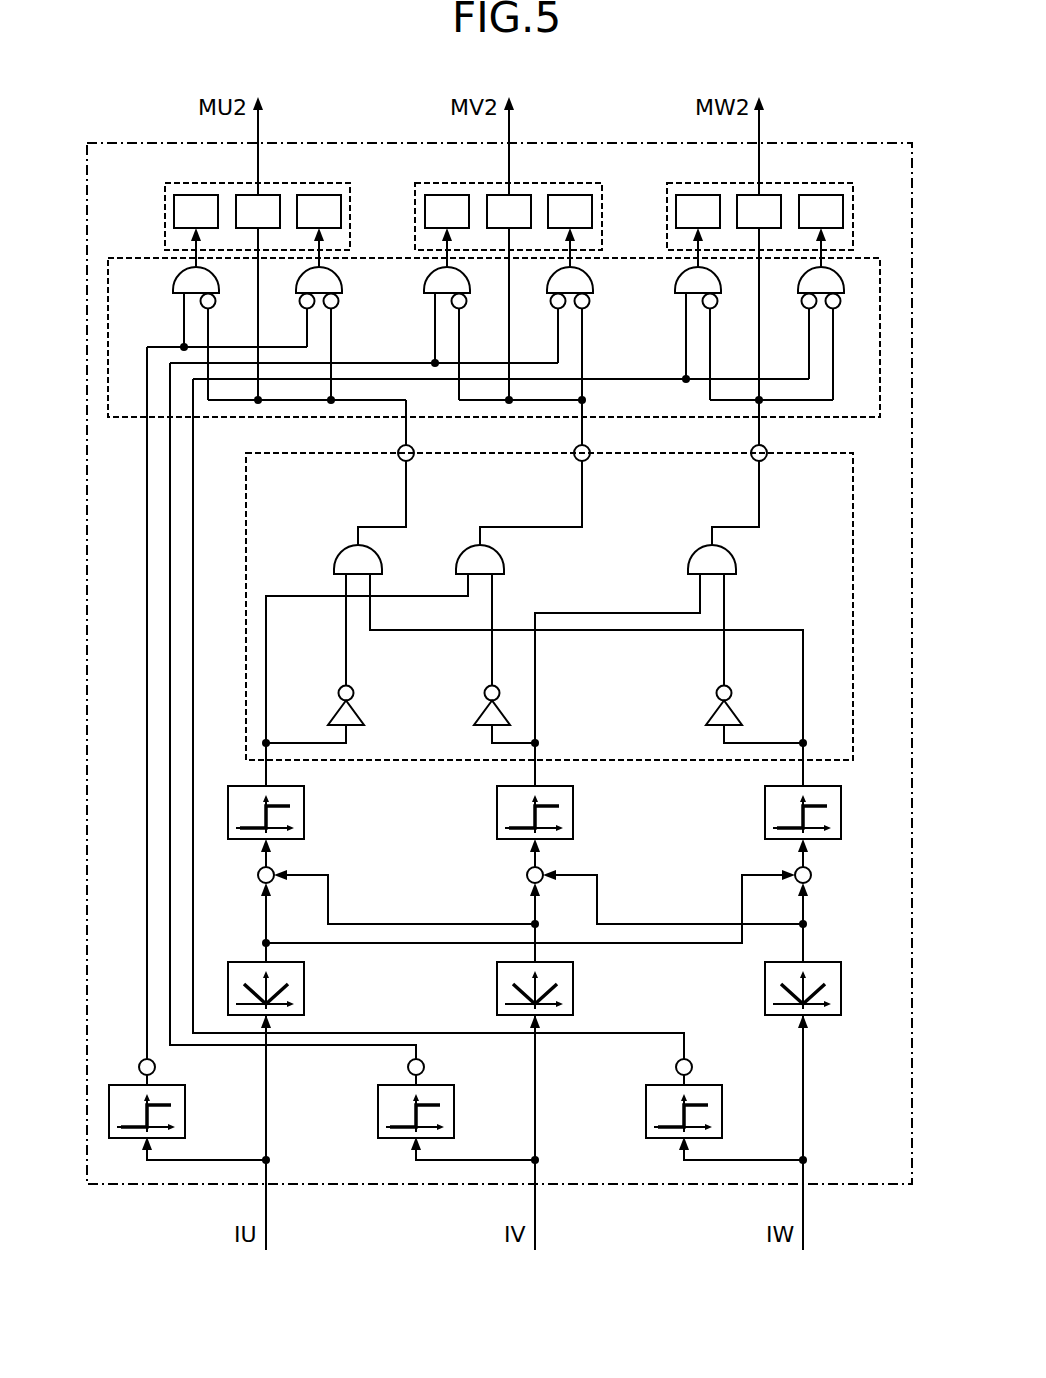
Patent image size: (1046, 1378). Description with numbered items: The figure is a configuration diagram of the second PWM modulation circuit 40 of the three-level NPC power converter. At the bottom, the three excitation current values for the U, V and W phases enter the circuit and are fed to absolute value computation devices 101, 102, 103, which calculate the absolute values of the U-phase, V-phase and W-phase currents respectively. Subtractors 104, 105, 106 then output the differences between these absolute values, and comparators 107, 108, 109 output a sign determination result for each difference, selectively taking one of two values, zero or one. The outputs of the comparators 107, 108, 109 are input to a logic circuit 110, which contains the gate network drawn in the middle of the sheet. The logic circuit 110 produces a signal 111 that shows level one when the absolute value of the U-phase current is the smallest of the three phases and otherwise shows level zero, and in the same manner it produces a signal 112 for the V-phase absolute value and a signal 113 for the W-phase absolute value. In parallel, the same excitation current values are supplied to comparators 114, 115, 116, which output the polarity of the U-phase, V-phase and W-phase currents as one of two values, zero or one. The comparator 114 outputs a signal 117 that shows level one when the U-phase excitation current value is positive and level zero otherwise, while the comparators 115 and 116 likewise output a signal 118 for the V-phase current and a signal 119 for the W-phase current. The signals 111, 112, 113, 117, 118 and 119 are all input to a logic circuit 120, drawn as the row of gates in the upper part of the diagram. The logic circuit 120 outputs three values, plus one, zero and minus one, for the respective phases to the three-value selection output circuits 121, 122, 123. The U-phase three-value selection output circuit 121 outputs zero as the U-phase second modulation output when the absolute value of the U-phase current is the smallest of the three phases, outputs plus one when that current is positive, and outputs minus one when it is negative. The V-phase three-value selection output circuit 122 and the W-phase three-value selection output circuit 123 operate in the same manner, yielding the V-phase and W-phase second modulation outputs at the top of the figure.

The second PWM modulation circuit 40 is at (828, 143).
The absolute value computation device 101 is at (304, 990).
The absolute value computation device 102 is at (573, 990).
The absolute value computation device 103 is at (841, 990).
The subtractor 104 is at (258, 876).
The subtractor 105 is at (527, 876).
The subtractor 106 is at (811, 876).
The comparator 107 is at (304, 806).
The comparator 108 is at (573, 806).
The comparator 109 is at (841, 806).
The logic circuit 110 is at (277, 453).
The signal 111 is at (413, 448).
The signal 112 is at (589, 448).
The signal 113 is at (766, 448).
The comparator 114 is at (185, 1112).
The comparator 115 is at (454, 1112).
The comparator 116 is at (722, 1112).
The signal 117 is at (155, 1064).
The signal 118 is at (424, 1064).
The signal 119 is at (692, 1064).
The logic circuit 120 is at (151, 258).
The U-phase three-value selection output circuit 121 is at (300, 183).
The V-phase three-value selection output circuit 122 is at (552, 183).
The W-phase three-value selection output circuit 123 is at (802, 183).